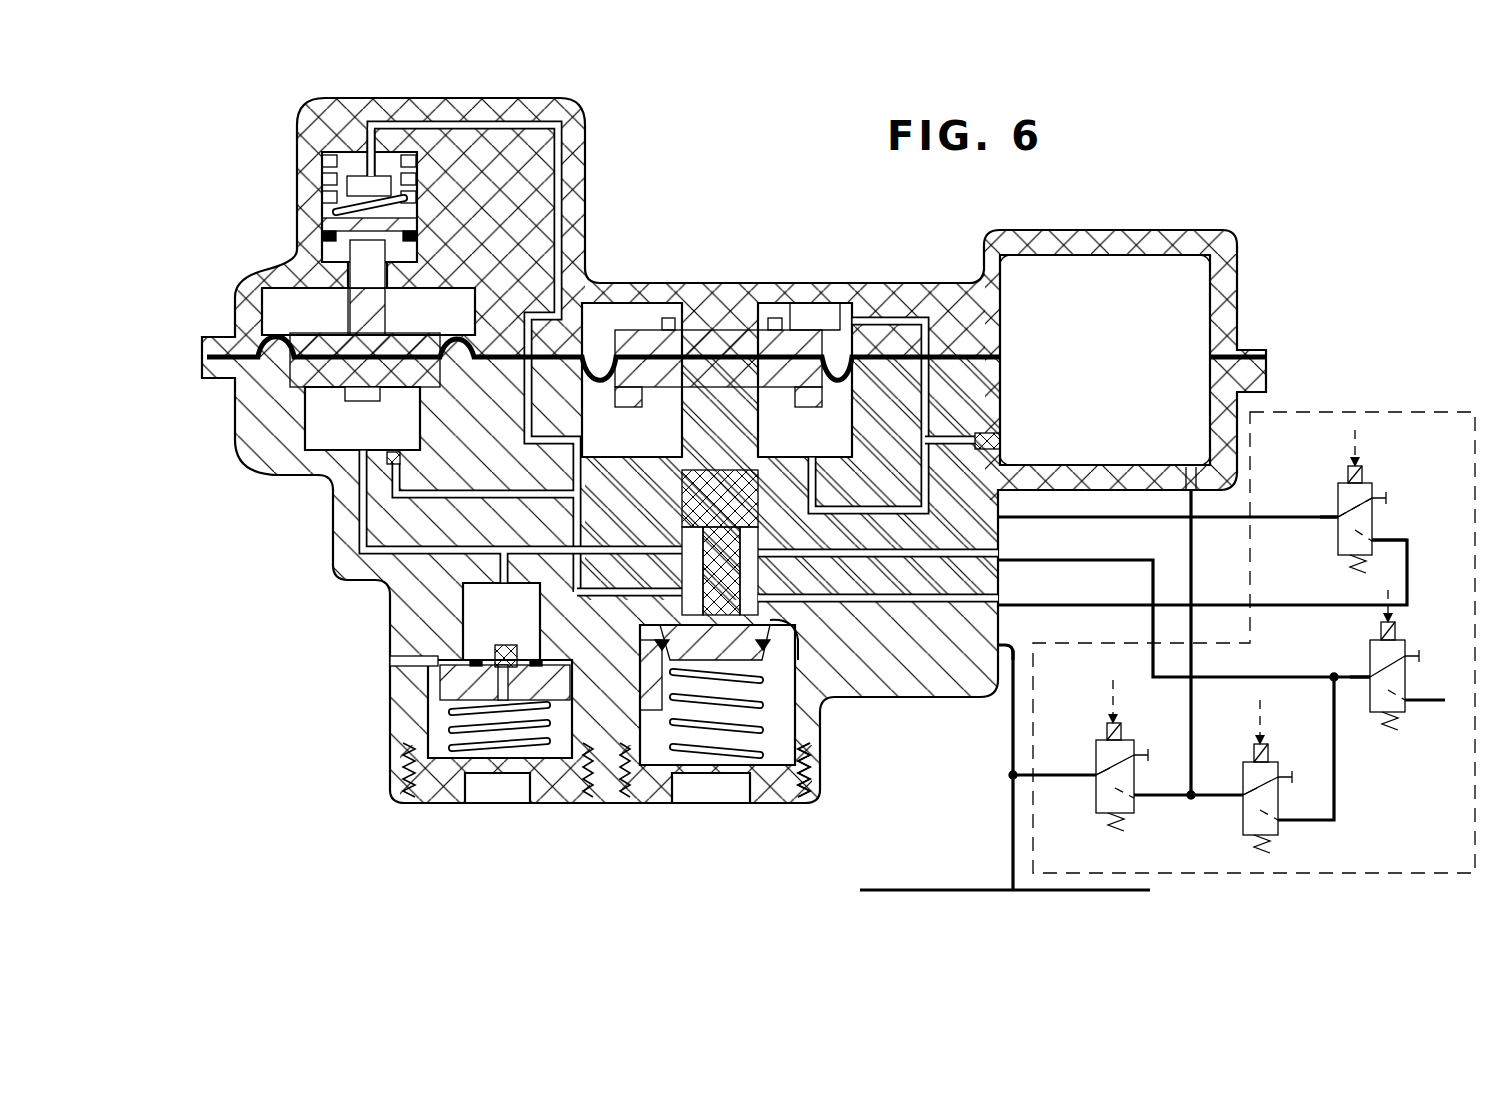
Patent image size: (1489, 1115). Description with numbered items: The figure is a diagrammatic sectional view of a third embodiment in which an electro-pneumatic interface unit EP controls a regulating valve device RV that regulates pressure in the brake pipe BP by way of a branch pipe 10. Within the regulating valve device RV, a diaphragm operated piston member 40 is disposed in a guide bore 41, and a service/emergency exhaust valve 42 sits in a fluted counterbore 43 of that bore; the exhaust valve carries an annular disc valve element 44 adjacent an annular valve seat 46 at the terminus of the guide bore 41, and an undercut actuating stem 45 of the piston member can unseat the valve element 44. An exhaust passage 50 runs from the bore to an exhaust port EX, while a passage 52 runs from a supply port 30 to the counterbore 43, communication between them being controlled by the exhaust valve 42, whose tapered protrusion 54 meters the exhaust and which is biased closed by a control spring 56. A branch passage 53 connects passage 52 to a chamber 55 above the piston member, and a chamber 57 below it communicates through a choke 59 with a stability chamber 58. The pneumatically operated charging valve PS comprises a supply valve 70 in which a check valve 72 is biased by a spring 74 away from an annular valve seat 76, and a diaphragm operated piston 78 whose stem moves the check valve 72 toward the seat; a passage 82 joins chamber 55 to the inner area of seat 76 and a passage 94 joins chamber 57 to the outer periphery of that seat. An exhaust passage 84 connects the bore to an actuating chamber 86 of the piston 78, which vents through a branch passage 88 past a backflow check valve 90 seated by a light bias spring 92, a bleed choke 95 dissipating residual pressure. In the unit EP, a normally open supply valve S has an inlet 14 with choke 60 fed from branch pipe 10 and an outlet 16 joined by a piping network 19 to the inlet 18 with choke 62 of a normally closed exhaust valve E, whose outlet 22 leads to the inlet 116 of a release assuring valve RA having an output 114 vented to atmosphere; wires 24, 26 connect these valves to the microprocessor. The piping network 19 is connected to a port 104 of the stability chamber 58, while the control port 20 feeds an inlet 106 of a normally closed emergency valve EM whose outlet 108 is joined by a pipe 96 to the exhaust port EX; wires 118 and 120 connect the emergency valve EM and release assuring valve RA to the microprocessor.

The annular valve seat 76 is at (372, 165).
The spring 74 is at (355, 178).
The supply valve 70 is at (352, 206).
The check valve 72 is at (345, 222).
The pneumatically operated charging valve PS is at (318, 300).
The diaphragm operated piston 78 is at (270, 367).
The passage 82 is at (586, 160).
The passage 94 is at (562, 235).
The diaphragm operated piston member 40 is at (630, 352).
The regulating valve device RV is at (736, 275).
The chamber 55 is at (825, 318).
The branch passage 53 is at (878, 318).
The stability chamber 58 is at (1090, 328).
The actuating chamber 86 is at (350, 437).
The chamber 57 is at (793, 450).
The choke 59 is at (985, 450).
The exhaust passage 84 is at (360, 522).
The branch passage 88 is at (560, 590).
The guide bore 41 is at (750, 537).
The actuating stem 45 is at (690, 572).
The exhaust passage 50 is at (806, 600).
The bleed choke 95 is at (475, 645).
The protrusion 54 is at (675, 637).
The annular valve seat 46 is at (790, 638).
The exhaust port EX is at (1005, 606).
The annular disc valve element 44 is at (668, 643).
The backflow check valve 90 is at (445, 690).
The fluted counterbore 43 is at (645, 700).
The bias spring 92 is at (450, 724).
The control spring 56 is at (652, 740).
The passage 52 is at (868, 700).
The supply port 30 is at (998, 652).
The service/emergency exhaust valve 42 is at (812, 755).
The branch pipe 10 is at (985, 770).
The brake pipe BP is at (1005, 866).
The control port 20 is at (1006, 518).
The piping network 19 is at (1191, 540).
The port 104 is at (1191, 490).
The electro-pneumatic interface unit EP is at (1391, 408).
The wire 118 is at (1356, 445).
The emergency valve EM is at (1376, 485).
The inlet 106 is at (1338, 517).
The outlet 108 is at (1374, 540).
The pipe 96 is at (1277, 605).
The wire 120 is at (1386, 595).
The release assuring valve RA is at (1410, 642).
The inlet 116 is at (1370, 677).
The output 114 is at (1407, 702).
The supply valve S is at (1096, 742).
The wire 24 is at (1118, 697).
The wire 26 is at (1258, 697).
The exhaust valve E is at (1280, 762).
The choke 60 is at (1066, 775).
The choke 62 is at (1215, 793).
The inlet 14 is at (1096, 782).
The outlet 16 is at (1134, 806).
The inlet 18 is at (1243, 805).
The outlet 22 is at (1280, 835).